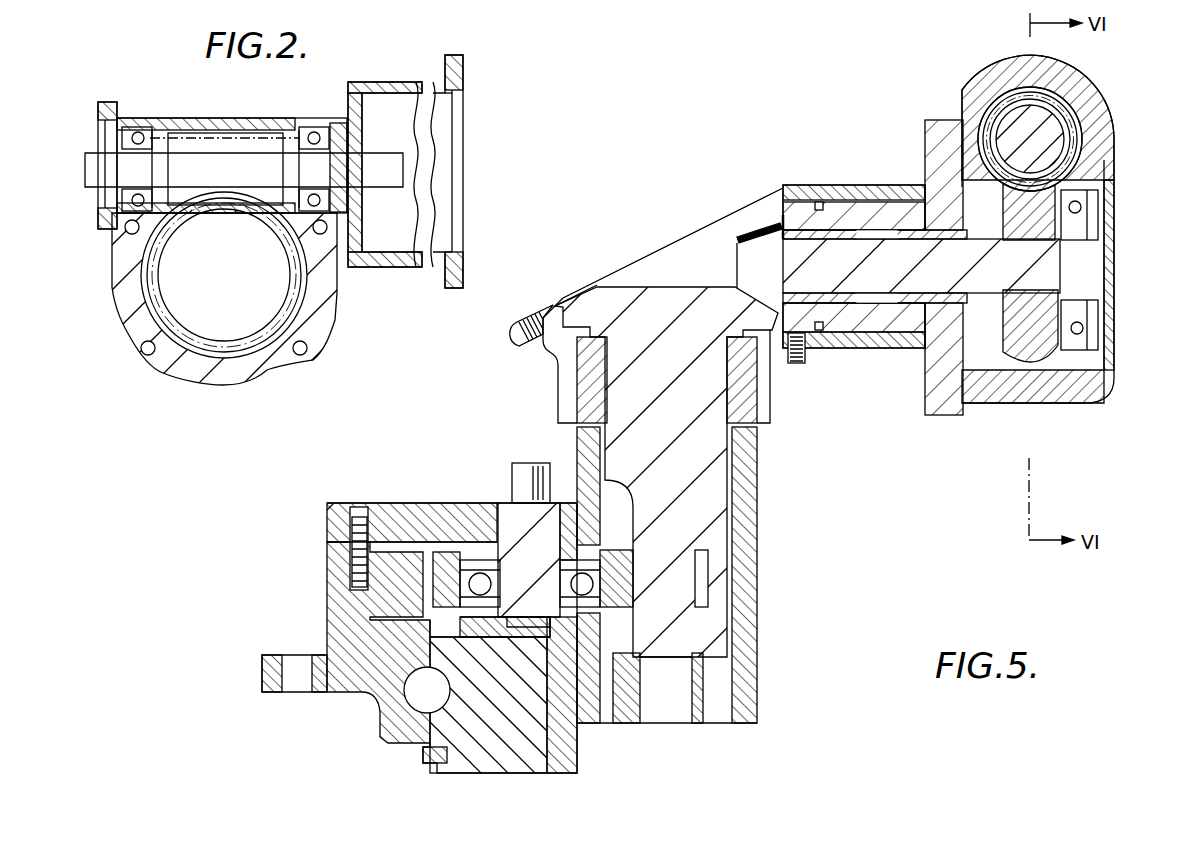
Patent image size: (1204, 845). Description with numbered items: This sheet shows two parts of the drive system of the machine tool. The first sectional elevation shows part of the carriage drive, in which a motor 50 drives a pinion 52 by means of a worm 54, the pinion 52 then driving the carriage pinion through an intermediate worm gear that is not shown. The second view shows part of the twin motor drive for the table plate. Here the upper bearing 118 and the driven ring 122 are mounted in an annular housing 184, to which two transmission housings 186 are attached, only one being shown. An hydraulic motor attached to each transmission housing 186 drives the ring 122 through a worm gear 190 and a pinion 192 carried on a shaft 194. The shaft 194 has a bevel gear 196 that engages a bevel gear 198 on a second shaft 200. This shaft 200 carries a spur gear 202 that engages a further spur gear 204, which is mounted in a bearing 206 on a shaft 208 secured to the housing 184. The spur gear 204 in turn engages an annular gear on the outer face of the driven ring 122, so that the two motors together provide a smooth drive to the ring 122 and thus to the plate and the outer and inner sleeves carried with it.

In FIG. 2, the motor 50 is at (405, 84).
In FIG. 2, the pinion 52 is at (267, 295).
In FIG. 2, the worm 54 is at (212, 150).
In FIG. 5, the bearing 118 is at (427, 690).
In FIG. 5, the driven ring 122 is at (340, 667).
In FIG. 5, the annular housing 184 is at (573, 760).
In FIG. 5, the transmission housing 186 is at (742, 672).
In FIG. 5, the worm gear 190 is at (1082, 140).
In FIG. 5, the pinion 192 is at (1045, 358).
In FIG. 5, the shaft 194 is at (848, 232).
In FIG. 5, the bevel gear 196 is at (748, 233).
In FIG. 5, the bevel gear 198 is at (563, 298).
In FIG. 5, the shaft 200 is at (733, 517).
In FIG. 5, the spur gear 202 is at (708, 582).
In FIG. 5, the spur gear 204 is at (450, 563).
In FIG. 5, the bearing 206 is at (427, 503).
In FIG. 5, the shaft 208 is at (507, 520).